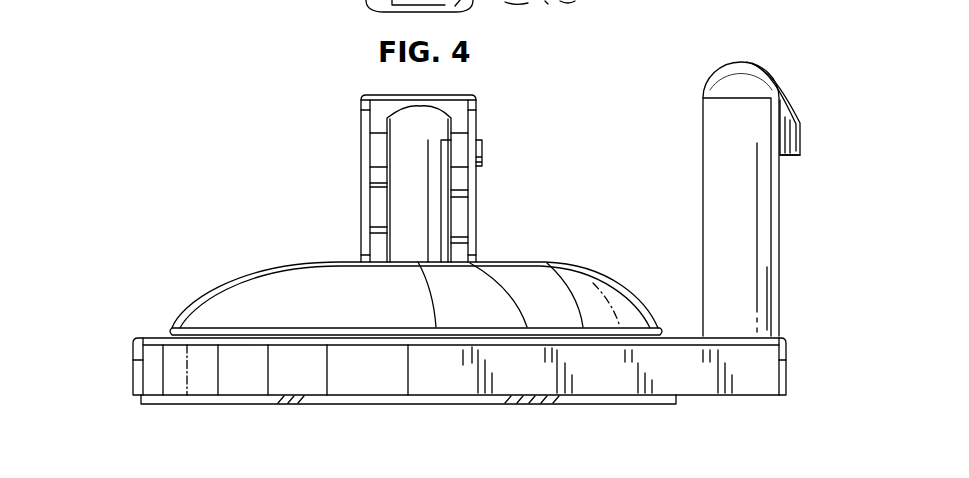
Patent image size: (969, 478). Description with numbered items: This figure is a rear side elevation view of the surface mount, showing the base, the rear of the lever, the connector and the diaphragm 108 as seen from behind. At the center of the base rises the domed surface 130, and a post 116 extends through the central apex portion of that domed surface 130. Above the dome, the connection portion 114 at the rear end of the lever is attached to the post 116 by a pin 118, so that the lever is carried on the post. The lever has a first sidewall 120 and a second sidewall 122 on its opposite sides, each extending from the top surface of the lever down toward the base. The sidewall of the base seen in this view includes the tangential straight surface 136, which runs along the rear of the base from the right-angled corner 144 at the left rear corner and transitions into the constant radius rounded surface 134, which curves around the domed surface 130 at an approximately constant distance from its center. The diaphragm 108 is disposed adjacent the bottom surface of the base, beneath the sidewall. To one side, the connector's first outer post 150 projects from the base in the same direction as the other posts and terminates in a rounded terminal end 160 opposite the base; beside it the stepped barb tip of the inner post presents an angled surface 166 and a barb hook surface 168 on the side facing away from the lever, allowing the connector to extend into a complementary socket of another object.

The diaphragm 108 is at (583, 398).
The connection portion 114 is at (478, 96).
The post 116 is at (398, 155).
The pin 118 is at (484, 152).
The first sidewall 120 is at (470, 190).
The second sidewall 122 is at (363, 192).
The domed surface 130 is at (547, 262).
The constant radius rounded surface 134 is at (133, 375).
The tangential straight surface 136 is at (695, 380).
The right-angled corner 144 is at (788, 378).
The first outer post 150 is at (738, 232).
The rounded terminal end 160 is at (732, 68).
The angled surface 166 is at (790, 97).
The barb hook surface 168 is at (795, 158).